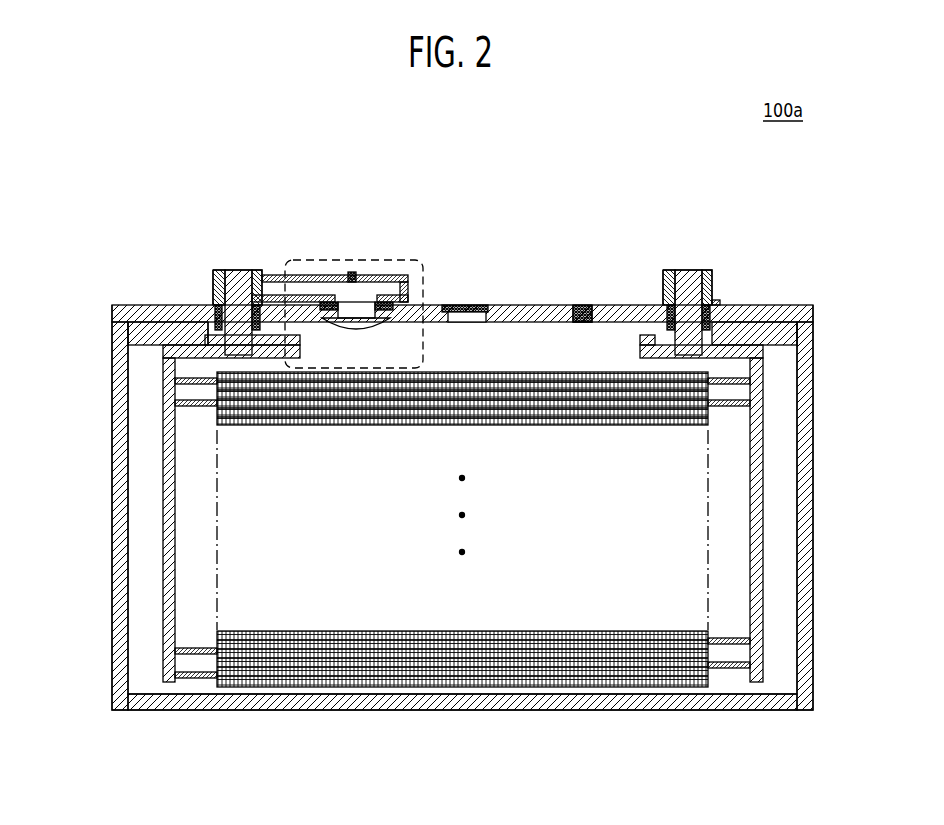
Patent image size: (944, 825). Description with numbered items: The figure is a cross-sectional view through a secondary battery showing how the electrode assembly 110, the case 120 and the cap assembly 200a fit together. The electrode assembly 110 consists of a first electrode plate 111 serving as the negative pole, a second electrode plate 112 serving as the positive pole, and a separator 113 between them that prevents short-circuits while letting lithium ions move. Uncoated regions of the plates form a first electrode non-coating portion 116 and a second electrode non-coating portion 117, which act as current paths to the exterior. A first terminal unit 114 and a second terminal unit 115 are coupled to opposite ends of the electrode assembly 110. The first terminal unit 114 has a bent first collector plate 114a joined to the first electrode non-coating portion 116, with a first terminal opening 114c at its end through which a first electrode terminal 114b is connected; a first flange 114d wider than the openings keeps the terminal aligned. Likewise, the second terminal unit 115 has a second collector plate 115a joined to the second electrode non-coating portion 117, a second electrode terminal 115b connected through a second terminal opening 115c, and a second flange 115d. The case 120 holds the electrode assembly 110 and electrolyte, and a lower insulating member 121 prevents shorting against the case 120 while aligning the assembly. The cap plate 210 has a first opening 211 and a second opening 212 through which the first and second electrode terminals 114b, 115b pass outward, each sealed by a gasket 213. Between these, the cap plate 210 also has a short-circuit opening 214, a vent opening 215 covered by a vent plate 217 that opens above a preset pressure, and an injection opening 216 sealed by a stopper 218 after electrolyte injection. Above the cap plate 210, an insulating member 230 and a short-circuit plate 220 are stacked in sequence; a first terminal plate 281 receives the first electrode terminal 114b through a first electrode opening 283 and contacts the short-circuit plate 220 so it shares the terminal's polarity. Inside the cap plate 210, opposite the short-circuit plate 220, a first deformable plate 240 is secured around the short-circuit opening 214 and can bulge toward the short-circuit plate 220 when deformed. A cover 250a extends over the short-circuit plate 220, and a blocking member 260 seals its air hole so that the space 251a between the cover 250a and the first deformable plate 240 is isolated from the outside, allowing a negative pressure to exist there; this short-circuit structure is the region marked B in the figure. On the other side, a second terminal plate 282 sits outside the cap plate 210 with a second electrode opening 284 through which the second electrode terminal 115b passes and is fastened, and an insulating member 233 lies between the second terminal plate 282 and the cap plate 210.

The electrode assembly 110 is at (462, 575).
The first electrode plate 111 is at (295, 687).
The second electrode plate 112 is at (640, 687).
The separator 113 is at (440, 687).
The first terminal unit 114 is at (160, 508).
The first collector plate 114a is at (163, 432).
The first electrode terminal 114b is at (163, 350).
The first terminal opening 114c is at (235, 384).
The first flange 114d is at (265, 406).
The second terminal unit 115 is at (776, 506).
The second collector plate 115a is at (866, 345).
The second electrode terminal 115b is at (745, 340).
The second terminal opening 115c is at (700, 406).
The second flange 115d is at (700, 322).
The first electrode non-coating portion 116 is at (195, 678).
The second electrode non-coating portion 117 is at (732, 668).
The case 120 is at (813, 520).
The lower insulating member 121 is at (128, 330).
The cap assembly 200a is at (553, 295).
The cap plate 210 is at (540, 305).
The first opening 211 is at (220, 300).
The second opening 212 is at (668, 300).
The gasket 213 is at (258, 305).
The short-circuit opening 214 is at (356, 318).
The vent opening 215 is at (468, 322).
The injection opening 216 is at (582, 322).
The vent plate 217 is at (492, 305).
The stopper 218 is at (585, 305).
The short-circuit plate 220 is at (300, 295).
The insulating member 230 is at (290, 355).
The insulating member 233 is at (670, 300).
The first deformable plate 240 is at (366, 320).
The cover 250a is at (402, 275).
The space 251a is at (340, 318).
The blocking member 260 is at (352, 272).
The first terminal plate 281 is at (218, 270).
The second terminal plate 282 is at (707, 270).
The first electrode opening 283 is at (257, 270).
The second electrode opening 284 is at (714, 300).
The short circuit region B is at (372, 260).